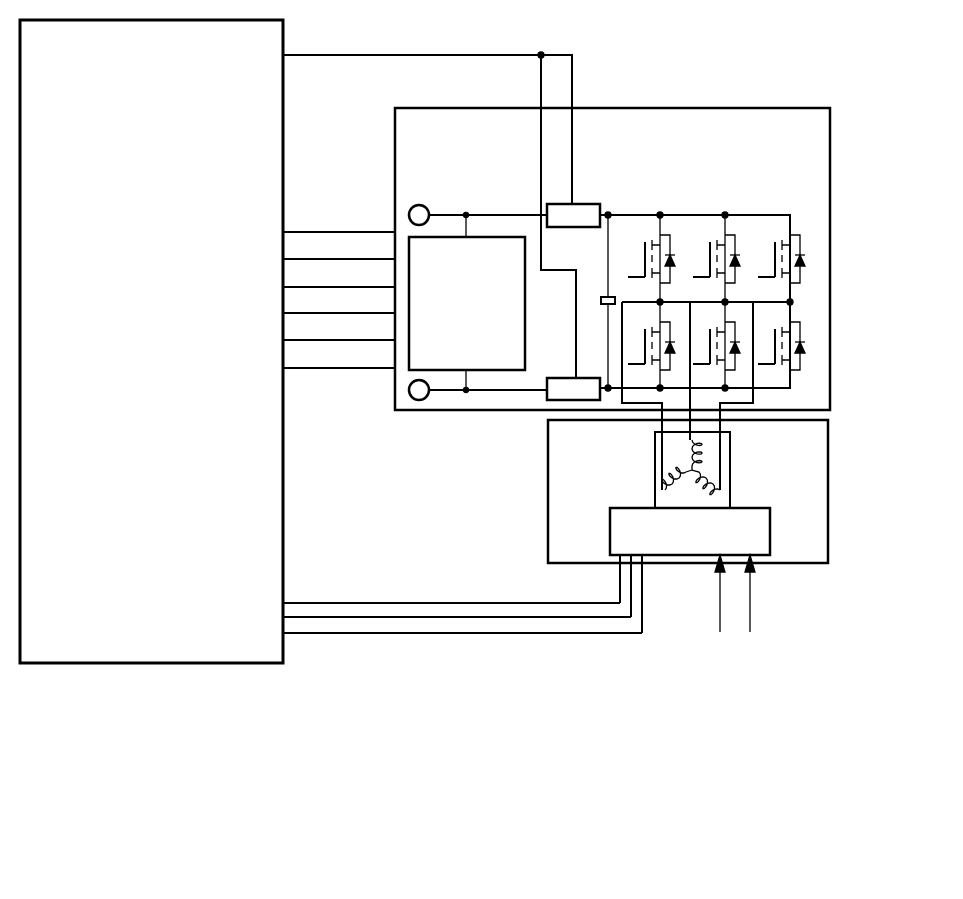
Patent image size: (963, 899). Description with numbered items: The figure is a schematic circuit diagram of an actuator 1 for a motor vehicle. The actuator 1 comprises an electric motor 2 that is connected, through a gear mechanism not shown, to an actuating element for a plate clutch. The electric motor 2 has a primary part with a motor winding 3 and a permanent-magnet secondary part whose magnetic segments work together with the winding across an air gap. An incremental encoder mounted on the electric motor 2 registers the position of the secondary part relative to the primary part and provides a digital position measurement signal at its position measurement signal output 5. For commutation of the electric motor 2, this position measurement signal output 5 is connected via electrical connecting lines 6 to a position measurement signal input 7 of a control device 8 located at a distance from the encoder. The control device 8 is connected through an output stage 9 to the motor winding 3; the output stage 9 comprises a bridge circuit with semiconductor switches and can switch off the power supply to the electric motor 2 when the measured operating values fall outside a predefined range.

The actuator 1 is at (727, 656).
The electric motor 2 is at (736, 463).
The motor winding 3 is at (672, 476).
The position measurement signal output 5 is at (648, 572).
The electrical connecting lines 6 is at (523, 603).
The position measurement signal input 7 is at (293, 598).
The control device 8 is at (155, 343).
The output stage 9 is at (765, 199).